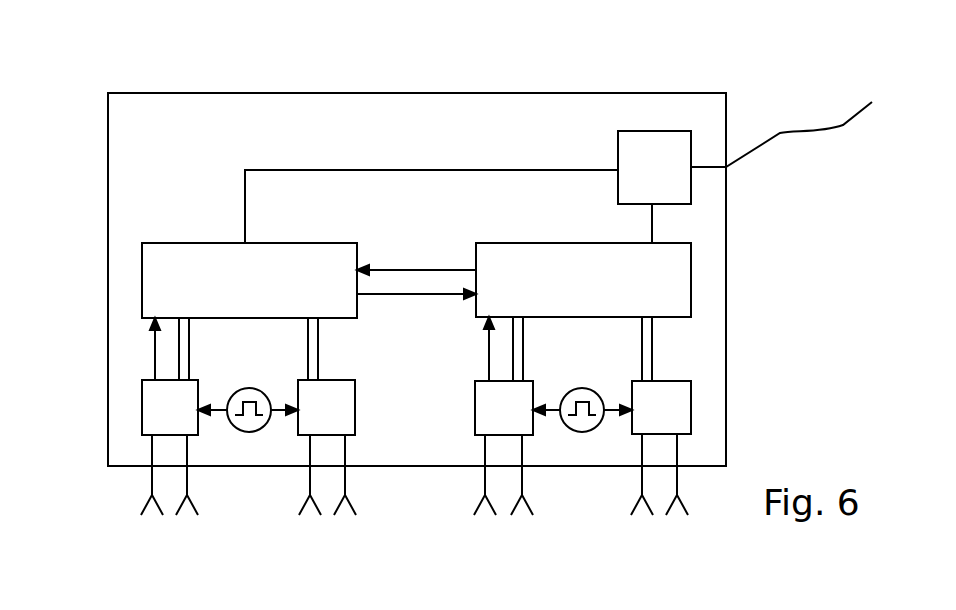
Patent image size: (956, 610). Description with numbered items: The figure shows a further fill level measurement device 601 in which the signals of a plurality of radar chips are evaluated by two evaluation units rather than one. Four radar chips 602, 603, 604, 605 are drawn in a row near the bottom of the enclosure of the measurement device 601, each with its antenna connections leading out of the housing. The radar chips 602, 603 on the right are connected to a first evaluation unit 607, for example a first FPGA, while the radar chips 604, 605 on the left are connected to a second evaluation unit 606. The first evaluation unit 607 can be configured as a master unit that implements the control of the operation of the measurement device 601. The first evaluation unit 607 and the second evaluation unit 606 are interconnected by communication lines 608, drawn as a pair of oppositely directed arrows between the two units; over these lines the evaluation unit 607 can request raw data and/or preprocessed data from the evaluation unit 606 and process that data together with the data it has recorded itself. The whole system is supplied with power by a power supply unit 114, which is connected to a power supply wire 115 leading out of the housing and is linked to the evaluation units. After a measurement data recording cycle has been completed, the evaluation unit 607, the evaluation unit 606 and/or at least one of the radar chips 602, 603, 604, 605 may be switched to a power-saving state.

The measurement device 601 is at (188, 93).
The power supply unit 114 is at (618, 138).
The power supply wire 115 is at (805, 133).
The second evaluation unit 606 is at (142, 269).
The first evaluation unit 607 is at (691, 275).
The communication lines 608 is at (453, 270).
The radar chip 605 is at (142, 407).
The radar chip 604 is at (355, 411).
The radar chip 603 is at (475, 424).
The radar chip 602 is at (691, 403).